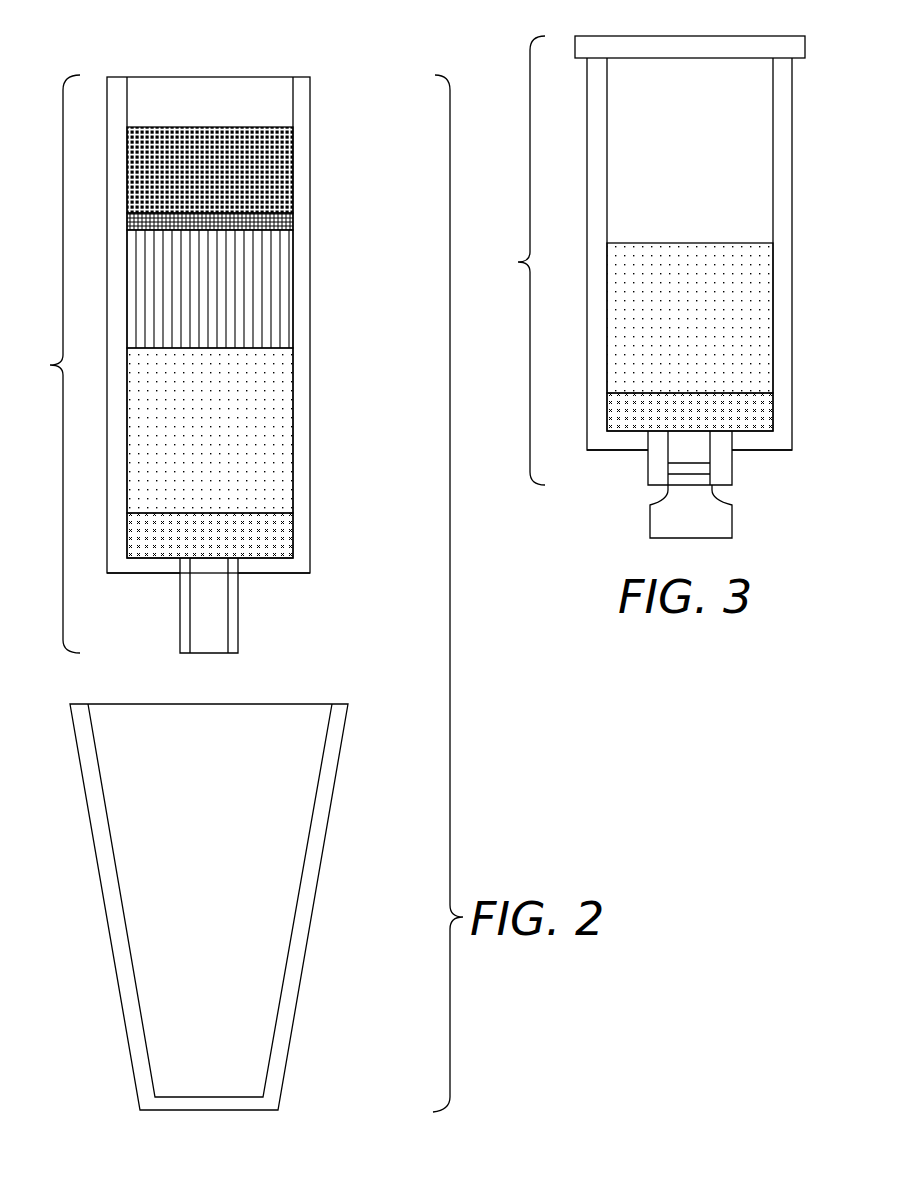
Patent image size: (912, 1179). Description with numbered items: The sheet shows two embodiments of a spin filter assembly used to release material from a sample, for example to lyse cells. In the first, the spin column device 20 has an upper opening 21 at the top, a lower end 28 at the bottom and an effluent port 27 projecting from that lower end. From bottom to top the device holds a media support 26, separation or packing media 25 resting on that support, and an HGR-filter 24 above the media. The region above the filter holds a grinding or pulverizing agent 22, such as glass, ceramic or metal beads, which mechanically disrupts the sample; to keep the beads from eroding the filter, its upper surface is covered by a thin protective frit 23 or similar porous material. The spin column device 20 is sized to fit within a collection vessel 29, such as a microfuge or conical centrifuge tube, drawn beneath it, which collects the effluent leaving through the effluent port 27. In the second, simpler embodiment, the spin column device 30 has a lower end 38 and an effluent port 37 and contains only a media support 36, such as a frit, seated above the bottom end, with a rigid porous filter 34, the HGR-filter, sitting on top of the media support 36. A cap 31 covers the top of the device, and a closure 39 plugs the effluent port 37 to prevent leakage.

In FIG. 2, the spin column device 20 is at (46, 364).
In FIG. 2, the upper opening 21 is at (208, 78).
In FIG. 2, the grinding or pulverizing agent 22 is at (296, 170).
In FIG. 2, the protective frit 23 is at (296, 220).
In FIG. 2, the HGR-filter 24 is at (282, 284).
In FIG. 2, the separation or packing media 25 is at (275, 447).
In FIG. 2, the media support 26 is at (290, 537).
In FIG. 2, the effluent port 27 is at (240, 620).
In FIG. 2, the lower end 28 is at (290, 575).
In FIG. 2, the collection vessel 29 is at (337, 770).
In FIG. 3, the spin column device 30 is at (637, 260).
In FIG. 3, the cap 31 is at (790, 45).
In FIG. 3, the rigid porous filter 34 is at (757, 315).
In FIG. 3, the media support 36 is at (775, 410).
In FIG. 3, the effluent port 37 is at (728, 455).
In FIG. 3, the lower end 38 is at (615, 450).
In FIG. 3, the closure 39 is at (720, 512).